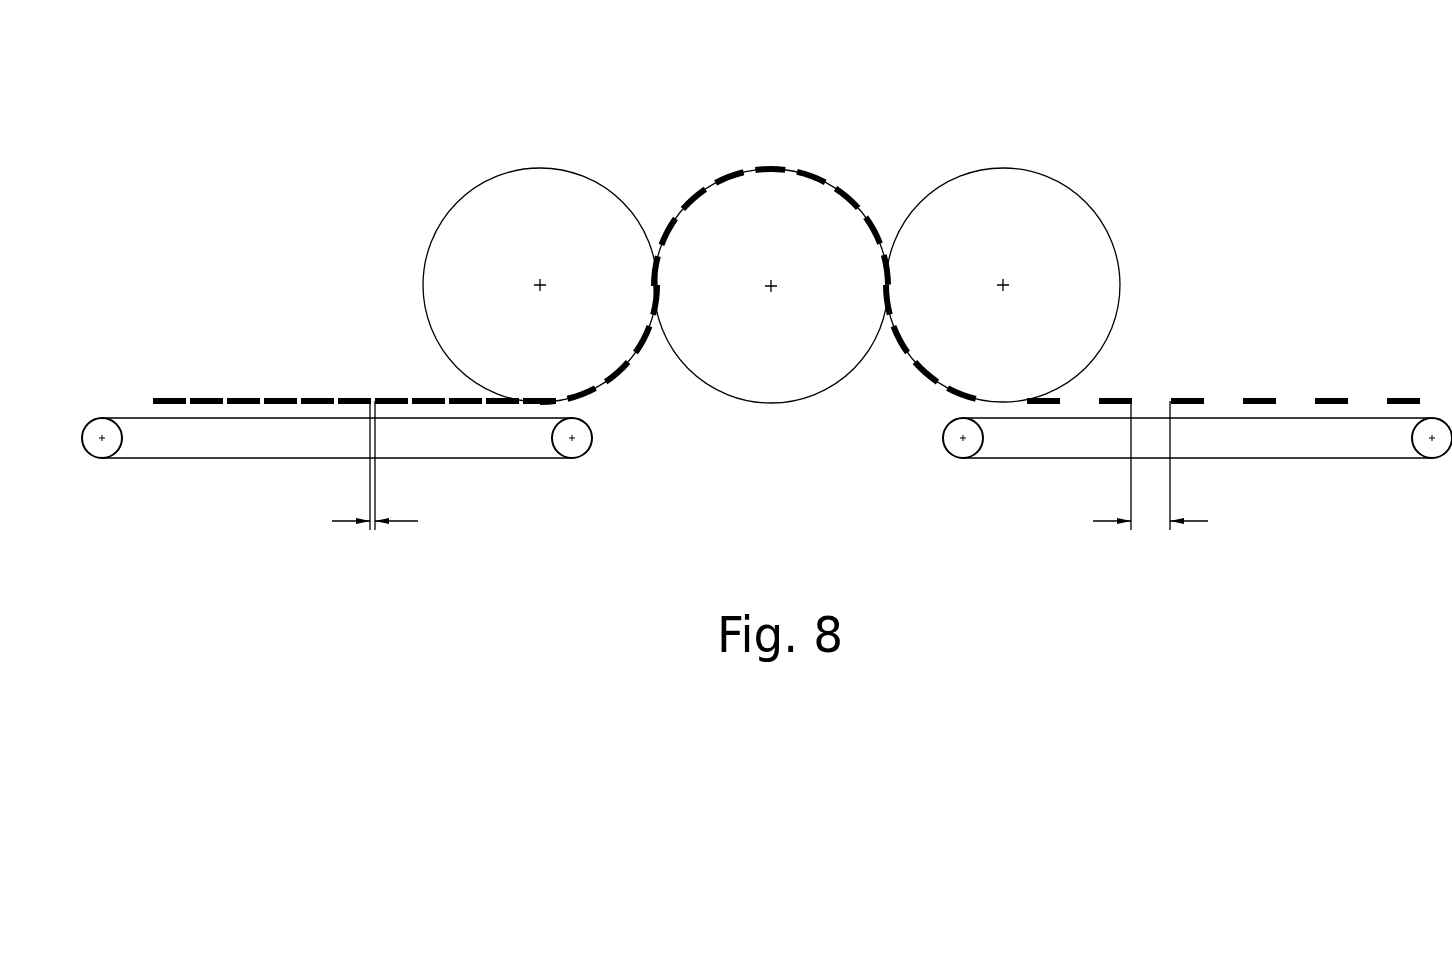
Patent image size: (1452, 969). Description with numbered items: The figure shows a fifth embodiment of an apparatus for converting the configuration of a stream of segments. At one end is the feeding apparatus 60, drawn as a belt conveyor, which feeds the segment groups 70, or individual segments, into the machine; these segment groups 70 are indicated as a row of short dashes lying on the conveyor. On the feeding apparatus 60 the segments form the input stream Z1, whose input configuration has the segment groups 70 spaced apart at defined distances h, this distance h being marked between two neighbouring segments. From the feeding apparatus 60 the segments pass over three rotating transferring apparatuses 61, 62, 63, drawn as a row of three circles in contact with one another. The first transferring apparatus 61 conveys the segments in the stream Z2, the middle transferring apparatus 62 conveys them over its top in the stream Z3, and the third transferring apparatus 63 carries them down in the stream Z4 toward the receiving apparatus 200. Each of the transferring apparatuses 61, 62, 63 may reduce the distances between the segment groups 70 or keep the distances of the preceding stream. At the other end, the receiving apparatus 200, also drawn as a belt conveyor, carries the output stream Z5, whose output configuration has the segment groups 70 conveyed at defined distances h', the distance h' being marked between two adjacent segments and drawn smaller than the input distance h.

The feeding apparatus 60 is at (1233, 473).
The transferring apparatus 61 is at (1055, 202).
The transferring apparatus 62 is at (813, 202).
The transferring apparatus 63 is at (483, 219).
The segment groups 70 is at (1117, 397).
The receiving apparatus 200 is at (286, 473).
The input stream Z1 is at (1255, 385).
The stream Z2 is at (912, 387).
The stream Z3 is at (719, 166).
The stream Z4 is at (620, 400).
The output stream Z5 is at (232, 385).
The defined distance h is at (1150, 465).
The defined distance h' is at (375, 465).